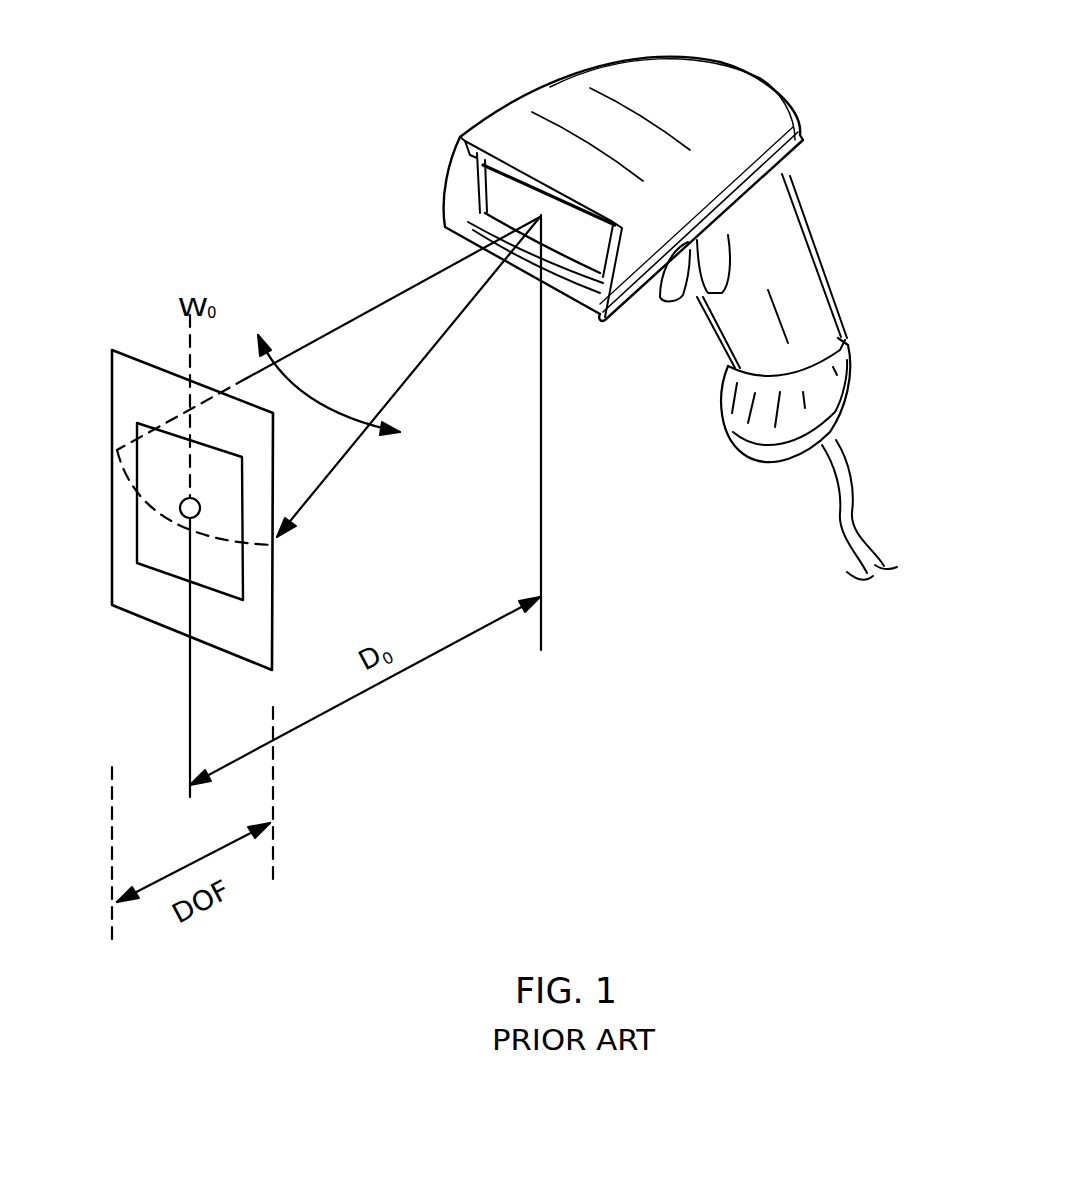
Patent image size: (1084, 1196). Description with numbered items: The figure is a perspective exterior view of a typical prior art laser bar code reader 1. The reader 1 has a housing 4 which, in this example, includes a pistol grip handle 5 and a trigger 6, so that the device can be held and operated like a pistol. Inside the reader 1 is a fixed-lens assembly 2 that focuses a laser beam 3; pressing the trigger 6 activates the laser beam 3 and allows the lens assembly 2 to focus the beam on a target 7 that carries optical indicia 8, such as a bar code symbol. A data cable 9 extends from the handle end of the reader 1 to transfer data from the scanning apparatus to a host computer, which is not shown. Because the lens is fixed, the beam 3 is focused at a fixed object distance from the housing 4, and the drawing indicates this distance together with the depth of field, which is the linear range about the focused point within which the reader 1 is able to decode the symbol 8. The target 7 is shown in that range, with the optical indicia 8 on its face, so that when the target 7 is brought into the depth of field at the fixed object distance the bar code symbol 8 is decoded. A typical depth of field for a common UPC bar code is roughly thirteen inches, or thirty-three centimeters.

The laser bar code reader 1 is at (682, 299).
The fixed-lens assembly 2 is at (542, 218).
The laser beam 3 is at (353, 350).
The housing 4 is at (747, 200).
The pistol grip handle 5 is at (813, 317).
The trigger 6 is at (658, 303).
The target 7 is at (140, 360).
The optical indicia 8 is at (133, 430).
The data cable 9 is at (853, 487).